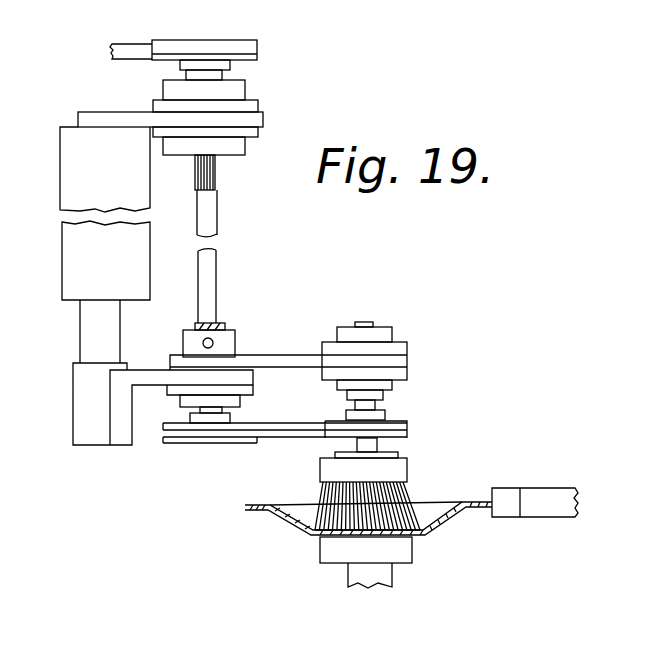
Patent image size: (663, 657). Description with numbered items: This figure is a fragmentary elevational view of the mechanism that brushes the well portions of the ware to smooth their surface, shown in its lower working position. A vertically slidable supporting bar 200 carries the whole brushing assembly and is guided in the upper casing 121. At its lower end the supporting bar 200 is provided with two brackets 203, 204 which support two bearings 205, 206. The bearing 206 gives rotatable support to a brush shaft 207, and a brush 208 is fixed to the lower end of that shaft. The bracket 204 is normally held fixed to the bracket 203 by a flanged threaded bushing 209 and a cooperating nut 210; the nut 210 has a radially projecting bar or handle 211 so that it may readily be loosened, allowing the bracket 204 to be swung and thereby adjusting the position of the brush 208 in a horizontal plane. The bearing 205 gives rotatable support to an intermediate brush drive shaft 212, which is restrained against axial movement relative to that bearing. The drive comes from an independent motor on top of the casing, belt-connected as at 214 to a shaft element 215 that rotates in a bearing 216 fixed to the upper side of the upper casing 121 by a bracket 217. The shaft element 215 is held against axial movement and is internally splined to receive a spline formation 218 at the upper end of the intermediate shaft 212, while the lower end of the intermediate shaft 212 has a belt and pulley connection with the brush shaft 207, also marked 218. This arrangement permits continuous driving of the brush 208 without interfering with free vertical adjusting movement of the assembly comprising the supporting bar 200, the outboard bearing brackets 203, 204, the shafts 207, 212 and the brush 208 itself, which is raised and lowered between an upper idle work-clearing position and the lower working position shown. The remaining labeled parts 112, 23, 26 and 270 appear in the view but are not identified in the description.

The belt connection 214 is at (122, 48).
The shaft element 215 is at (222, 75).
The bearing 216 is at (255, 103).
The bracket 217 is at (116, 118).
The spline formation 218 is at (215, 178).
The intermediate brush drive shaft 212 is at (217, 223).
The radially projecting bar or handle 211 is at (212, 339).
The nut 210 is at (235, 340).
The bracket 204 is at (308, 355).
The upper casing 121 is at (70, 132).
The supporting bar 200 is at (120, 318).
The bracket 203 is at (150, 373).
The flanged threaded bushing 209 is at (167, 388).
The bearing 205 is at (240, 400).
The brush shaft 207 is at (365, 322).
The bearing 206 is at (388, 333).
The brush 208 is at (407, 465).
The brush 112 is at (320, 547).
The shaft 26 is at (372, 582).
The dish 23 is at (471, 531).
The support block 270 is at (542, 488).